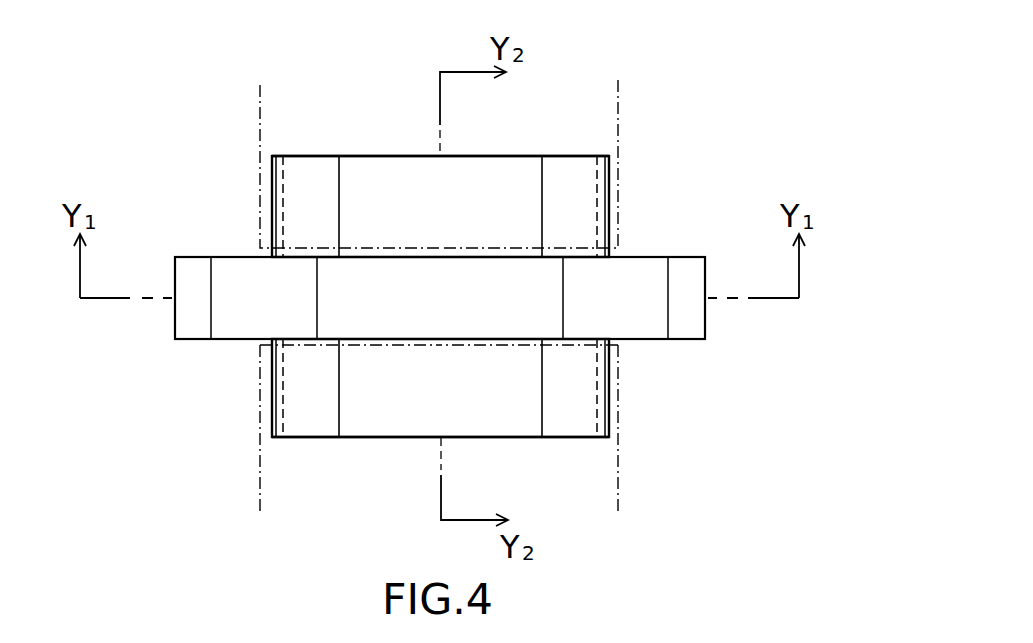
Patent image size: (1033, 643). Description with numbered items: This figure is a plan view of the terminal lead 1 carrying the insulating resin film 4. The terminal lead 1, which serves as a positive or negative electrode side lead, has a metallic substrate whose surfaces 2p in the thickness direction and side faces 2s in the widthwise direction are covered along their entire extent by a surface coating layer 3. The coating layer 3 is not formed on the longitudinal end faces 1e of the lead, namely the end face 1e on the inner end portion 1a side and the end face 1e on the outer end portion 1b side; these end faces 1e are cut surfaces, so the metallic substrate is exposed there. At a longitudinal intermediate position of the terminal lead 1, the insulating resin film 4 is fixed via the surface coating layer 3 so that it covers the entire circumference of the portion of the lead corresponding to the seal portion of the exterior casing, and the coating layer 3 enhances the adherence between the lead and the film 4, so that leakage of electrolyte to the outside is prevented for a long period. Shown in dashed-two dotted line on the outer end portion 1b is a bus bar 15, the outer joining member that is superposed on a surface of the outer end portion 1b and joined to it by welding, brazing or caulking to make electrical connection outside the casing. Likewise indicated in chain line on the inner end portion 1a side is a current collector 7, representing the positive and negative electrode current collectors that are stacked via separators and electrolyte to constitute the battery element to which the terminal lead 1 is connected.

The terminal lead 1 is at (491, 272).
The inner end portion 1a is at (510, 380).
The outer end portion 1b is at (510, 222).
The end face 1e is at (380, 157).
The side face of metallic substrate 2s is at (282, 210).
The surface of metallic substrate 2p is at (450, 210).
The surface coating layer 3 is at (278, 180).
The insulating resin film 4 is at (247, 307).
The current collector 7 is at (619, 483).
The bus bar 15 is at (258, 100).